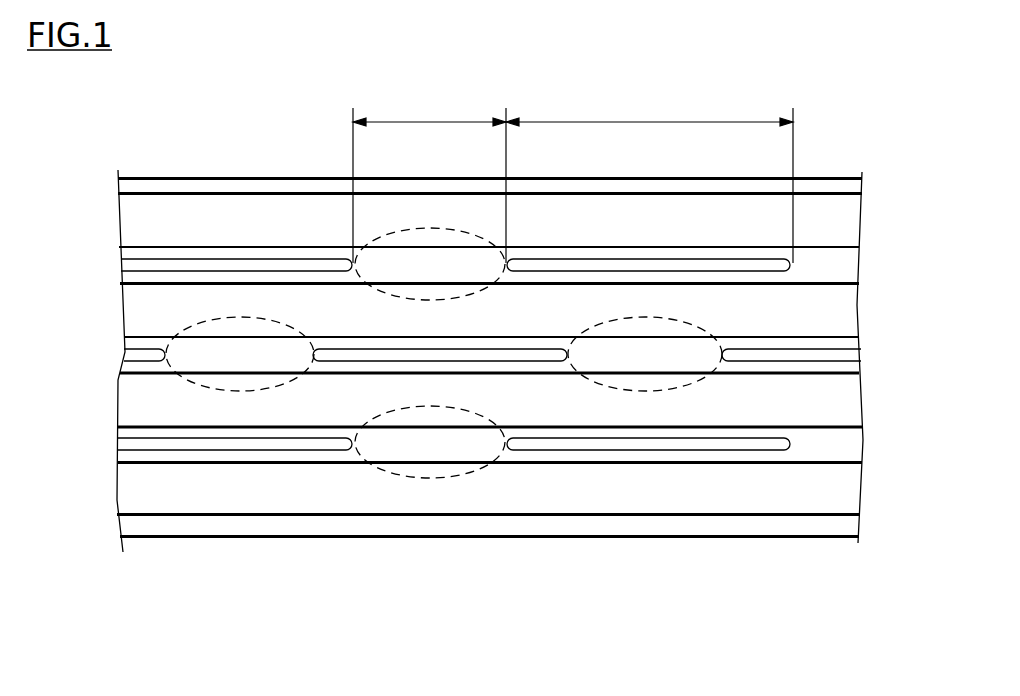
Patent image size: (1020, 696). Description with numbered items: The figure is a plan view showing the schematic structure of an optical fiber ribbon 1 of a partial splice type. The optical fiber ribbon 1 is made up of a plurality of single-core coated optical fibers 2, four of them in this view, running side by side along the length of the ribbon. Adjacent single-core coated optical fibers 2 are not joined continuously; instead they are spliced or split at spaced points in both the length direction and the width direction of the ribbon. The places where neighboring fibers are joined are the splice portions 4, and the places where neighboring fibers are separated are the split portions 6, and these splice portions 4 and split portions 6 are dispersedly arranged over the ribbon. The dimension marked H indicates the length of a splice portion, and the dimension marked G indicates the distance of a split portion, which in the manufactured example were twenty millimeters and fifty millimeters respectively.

The optical fiber ribbon 1 is at (313, 130).
The single-core coated optical fiber 2 is at (843, 227).
The splice portion 4 is at (390, 292).
The split portion 6 is at (197, 268).